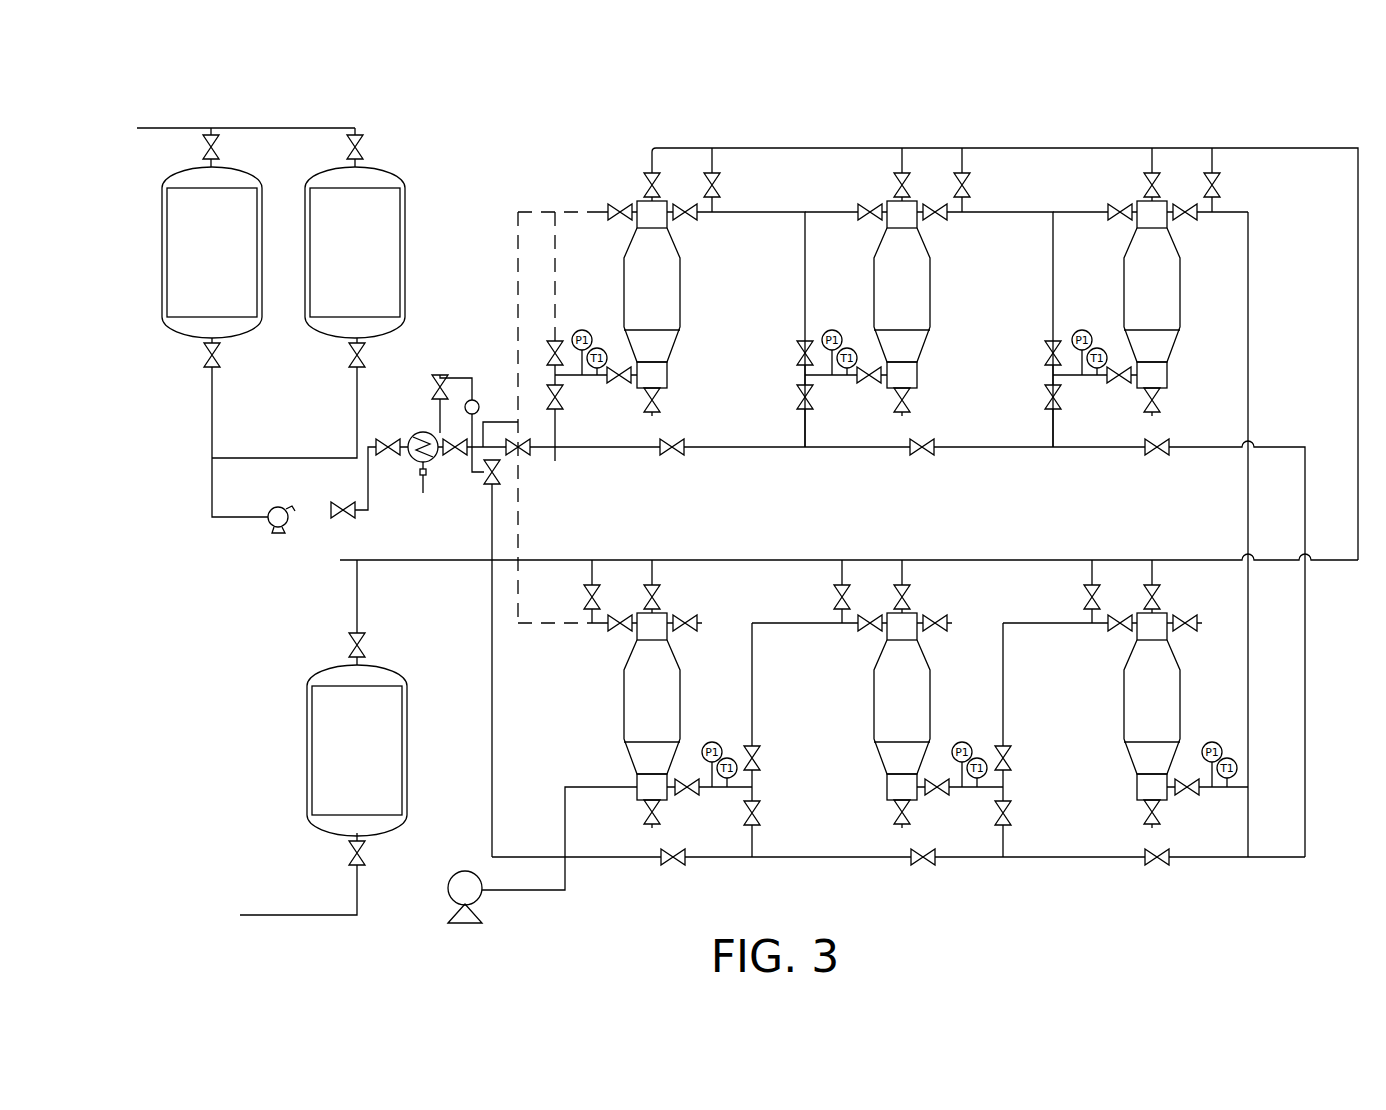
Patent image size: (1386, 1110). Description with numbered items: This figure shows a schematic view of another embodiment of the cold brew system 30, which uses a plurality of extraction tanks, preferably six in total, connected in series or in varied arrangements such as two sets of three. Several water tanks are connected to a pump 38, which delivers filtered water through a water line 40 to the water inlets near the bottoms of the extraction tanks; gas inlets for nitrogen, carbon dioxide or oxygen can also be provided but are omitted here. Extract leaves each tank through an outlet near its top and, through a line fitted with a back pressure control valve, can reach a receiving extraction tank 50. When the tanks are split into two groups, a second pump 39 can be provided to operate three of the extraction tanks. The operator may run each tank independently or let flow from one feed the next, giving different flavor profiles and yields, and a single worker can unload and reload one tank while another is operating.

The system 30 is at (682, 91).
The pump 38 is at (268, 528).
The second pump 39 is at (450, 882).
The water line 40 is at (368, 488).
The extraction tank 50 is at (308, 745).